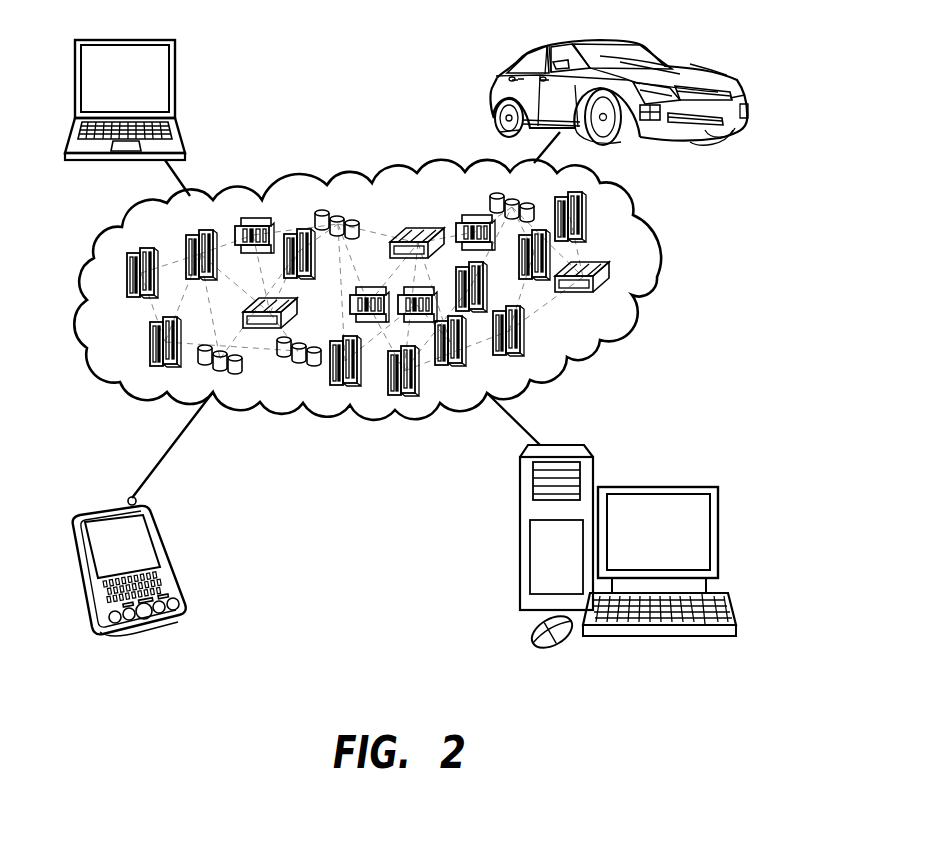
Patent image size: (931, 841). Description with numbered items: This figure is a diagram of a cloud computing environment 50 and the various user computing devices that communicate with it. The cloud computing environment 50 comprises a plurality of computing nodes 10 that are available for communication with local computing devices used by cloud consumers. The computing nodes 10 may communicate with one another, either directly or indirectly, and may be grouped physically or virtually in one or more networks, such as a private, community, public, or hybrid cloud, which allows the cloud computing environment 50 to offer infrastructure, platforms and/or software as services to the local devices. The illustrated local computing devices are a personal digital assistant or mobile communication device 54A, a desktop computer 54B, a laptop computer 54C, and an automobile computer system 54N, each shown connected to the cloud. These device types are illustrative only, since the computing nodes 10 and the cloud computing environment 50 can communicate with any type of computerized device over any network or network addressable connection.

The computing nodes 10 is at (637, 325).
The cloud computing environment 50 is at (658, 278).
The personal digital assistant (PDA) or mobile communication device 54A is at (173, 555).
The desktop computer 54B is at (720, 517).
The laptop computer 54C is at (177, 89).
The automobile computer system 54N is at (500, 92).